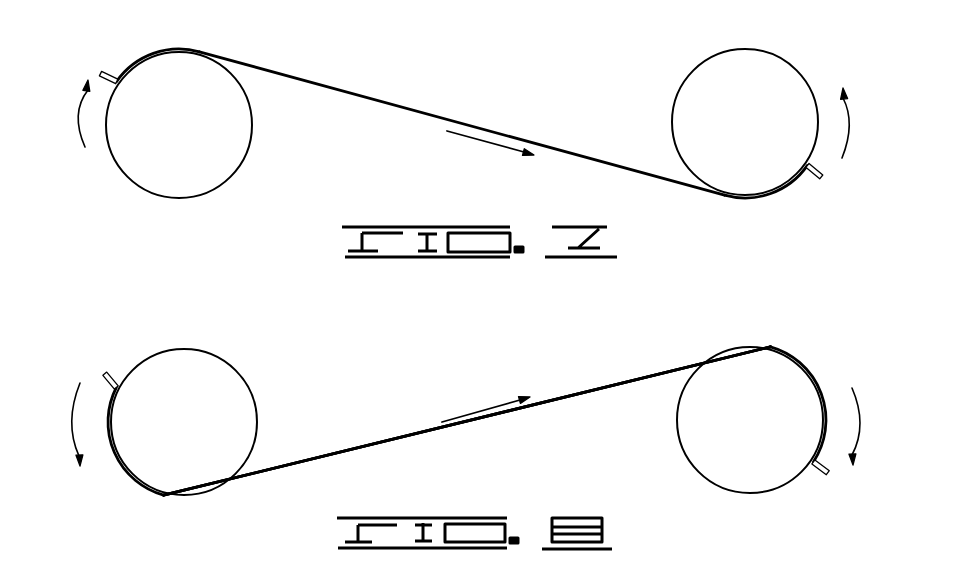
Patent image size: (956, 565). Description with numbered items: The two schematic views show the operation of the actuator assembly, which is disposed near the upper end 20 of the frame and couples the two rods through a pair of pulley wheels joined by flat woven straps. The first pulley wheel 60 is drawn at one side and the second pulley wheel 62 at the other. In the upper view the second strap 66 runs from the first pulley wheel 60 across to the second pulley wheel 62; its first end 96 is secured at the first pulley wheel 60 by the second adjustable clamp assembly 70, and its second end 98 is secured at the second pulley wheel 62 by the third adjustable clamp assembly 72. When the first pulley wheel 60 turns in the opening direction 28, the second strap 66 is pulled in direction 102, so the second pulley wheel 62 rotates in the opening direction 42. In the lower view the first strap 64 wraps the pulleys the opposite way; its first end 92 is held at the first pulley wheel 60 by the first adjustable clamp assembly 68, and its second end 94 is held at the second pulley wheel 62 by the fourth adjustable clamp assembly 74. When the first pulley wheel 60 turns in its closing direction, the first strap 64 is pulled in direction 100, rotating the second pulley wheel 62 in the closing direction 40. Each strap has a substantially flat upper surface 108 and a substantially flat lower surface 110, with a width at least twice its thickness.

In FIG. 8, the upper end 20 is at (838, 385).
In FIG. 7, the opening direction 28 is at (848, 140).
In FIG. 8, the closing direction 40 is at (77, 425).
In FIG. 7, the opening direction 42 is at (80, 140).
In FIG. 7, the first pulley wheel 60 is at (715, 97).
In FIG. 8, the first pulley wheel 60 is at (693, 433).
In FIG. 7, the second pulley wheel 62 is at (193, 168).
In FIG. 8, the second pulley wheel 62 is at (230, 390).
In FIG. 8, the first strap 64 is at (507, 407).
In FIG. 7, the second strap 66 is at (607, 167).
In FIG. 8, the first adjustable clamp assembly 68 is at (820, 484).
In FIG. 7, the second adjustable clamp assembly 70 is at (818, 182).
In FIG. 7, the third adjustable clamp assembly 72 is at (100, 70).
In FIG. 8, the fourth adjustable clamp assembly 74 is at (103, 365).
In FIG. 8, the first end 92 is at (830, 472).
In FIG. 8, the second end 94 is at (103, 377).
In FIG. 7, the first end 96 is at (803, 170).
In FIG. 7, the second end 98 is at (115, 73).
In FIG. 8, the direction 100 is at (492, 402).
In FIG. 7, the direction 102 is at (480, 143).
In FIG. 8, the upper surface 108 is at (400, 443).
In FIG. 8, the lower surface 110 is at (382, 440).